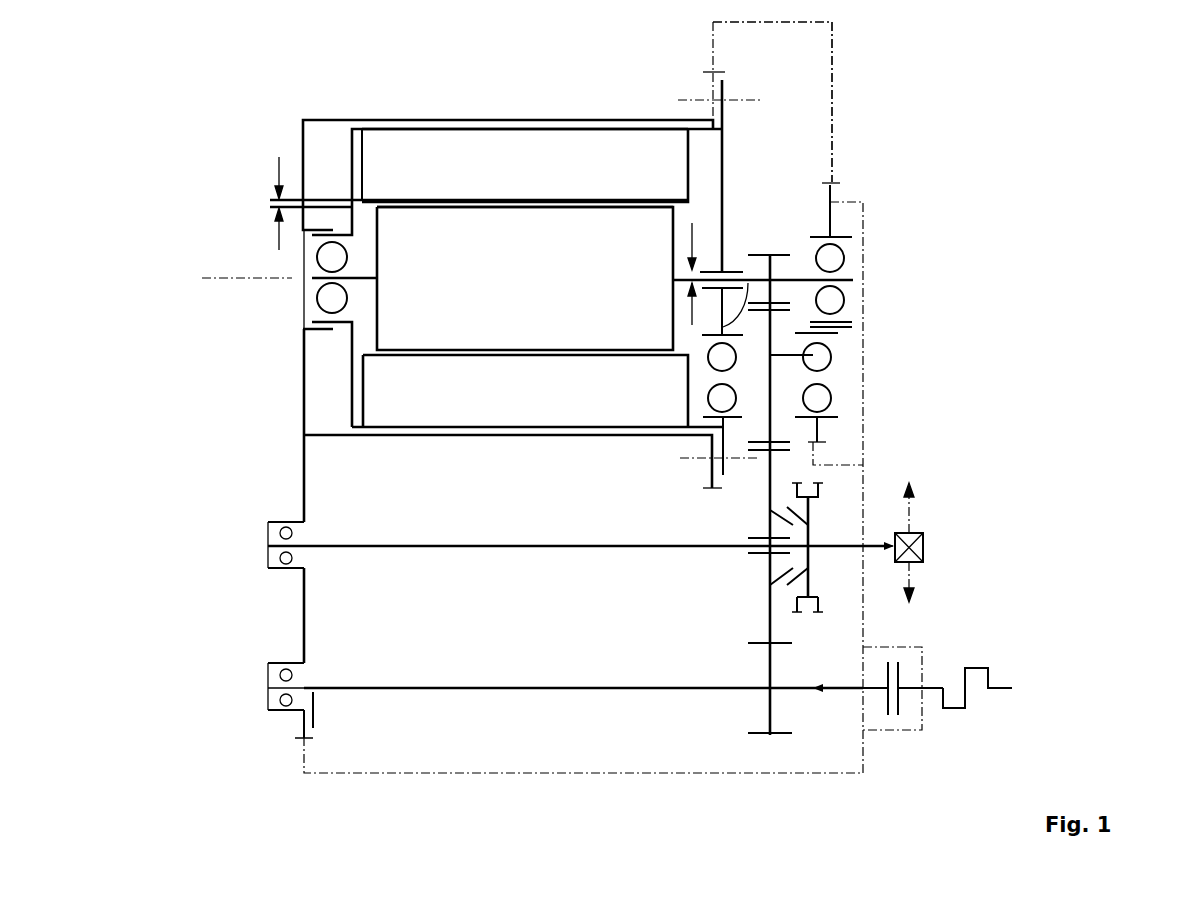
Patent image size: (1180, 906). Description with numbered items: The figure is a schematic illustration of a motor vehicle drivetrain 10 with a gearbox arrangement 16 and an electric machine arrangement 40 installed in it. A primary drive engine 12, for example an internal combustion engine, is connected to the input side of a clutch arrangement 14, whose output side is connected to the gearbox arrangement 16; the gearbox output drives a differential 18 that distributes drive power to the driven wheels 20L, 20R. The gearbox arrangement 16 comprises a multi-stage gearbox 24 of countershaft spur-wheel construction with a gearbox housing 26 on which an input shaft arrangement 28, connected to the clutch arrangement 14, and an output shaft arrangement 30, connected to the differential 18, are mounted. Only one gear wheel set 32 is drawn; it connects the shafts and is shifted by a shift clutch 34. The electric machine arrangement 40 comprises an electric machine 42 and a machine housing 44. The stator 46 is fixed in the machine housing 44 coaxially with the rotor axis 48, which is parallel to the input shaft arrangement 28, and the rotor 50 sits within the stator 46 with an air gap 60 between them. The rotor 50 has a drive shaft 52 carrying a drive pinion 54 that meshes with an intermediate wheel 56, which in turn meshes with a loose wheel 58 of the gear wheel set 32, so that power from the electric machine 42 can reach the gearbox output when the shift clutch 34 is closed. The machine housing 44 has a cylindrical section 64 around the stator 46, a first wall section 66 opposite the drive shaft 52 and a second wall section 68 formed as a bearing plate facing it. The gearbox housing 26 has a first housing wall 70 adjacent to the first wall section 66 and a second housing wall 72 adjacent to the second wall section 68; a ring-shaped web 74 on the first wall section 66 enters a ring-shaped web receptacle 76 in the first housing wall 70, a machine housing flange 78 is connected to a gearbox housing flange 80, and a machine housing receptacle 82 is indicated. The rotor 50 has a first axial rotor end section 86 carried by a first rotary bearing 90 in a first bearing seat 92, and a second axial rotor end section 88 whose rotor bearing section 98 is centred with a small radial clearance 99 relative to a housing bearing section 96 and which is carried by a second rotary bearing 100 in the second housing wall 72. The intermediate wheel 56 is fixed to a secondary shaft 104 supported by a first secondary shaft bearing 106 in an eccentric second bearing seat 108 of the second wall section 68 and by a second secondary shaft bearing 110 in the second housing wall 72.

The drivetrain 10 is at (993, 245).
The primary drive engine 12 is at (968, 668).
The clutch arrangement 14 is at (922, 670).
The gearbox arrangement 16 is at (862, 143).
The differential 18 is at (926, 547).
The driven wheel 20R is at (912, 512).
The driven wheel 20L is at (912, 580).
The multi-stage gearbox 24 is at (348, 495).
The gearbox housing 26 is at (303, 613).
The input shaft arrangement 28 is at (838, 687).
The output shaft arrangement 30 is at (830, 546).
The gear wheel set 32 is at (768, 740).
The shift clutch 34 is at (778, 600).
The electric machine arrangement 40 is at (332, 147).
The electric machine 42 is at (572, 160).
The machine housing 44 is at (346, 137).
The stator 46 is at (492, 153).
The rotor axis 48 is at (213, 278).
The rotor 50 is at (448, 230).
The drive shaft 52 is at (812, 272).
The drive pinion 54 is at (750, 268).
The intermediate wheel 56 is at (813, 353).
The loose wheel 58 is at (768, 495).
The air gap 60 is at (279, 160).
The cylindrical section 64 is at (537, 130).
The first wall section 66 is at (348, 163).
The second wall section 68 is at (725, 152).
The first housing wall 70 is at (303, 452).
The second housing wall 72 is at (835, 222).
The ring-shaped web 74 is at (305, 313).
The ring-shaped web receptacle 76 is at (323, 332).
The machine housing flange 78 is at (712, 73).
The gearbox housing flange 80 is at (712, 100).
The machine housing receptacle 82 is at (320, 433).
The first axial rotor end section 86 is at (313, 270).
The second axial rotor end section 88 is at (686, 274).
The first rotary bearing 90 is at (316, 292).
The first bearing seat 92 is at (347, 240).
The housing bearing section 96 is at (703, 290).
The rotor bearing section 98 is at (700, 325).
The radial clearance 99 is at (688, 238).
The second rotary bearing 100 is at (845, 258).
The secondary shaft 104 is at (832, 365).
The first secondary shaft bearing 106 is at (707, 393).
The second bearing seat 108 is at (703, 402).
The second secondary shaft bearing 110 is at (840, 400).